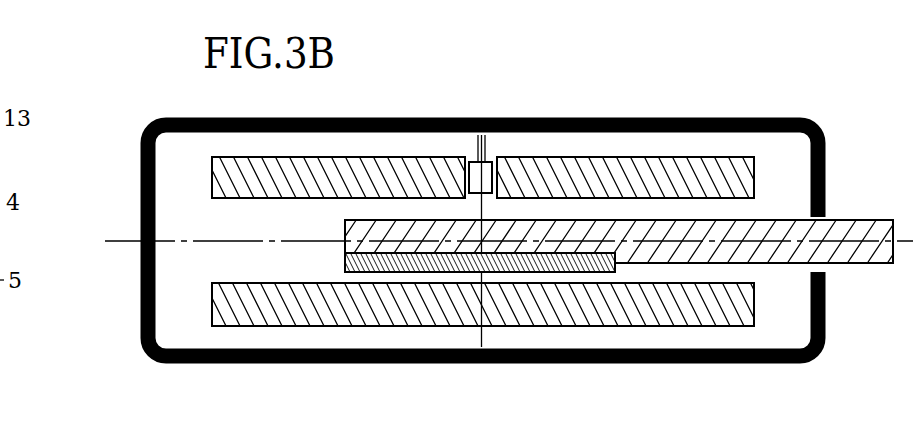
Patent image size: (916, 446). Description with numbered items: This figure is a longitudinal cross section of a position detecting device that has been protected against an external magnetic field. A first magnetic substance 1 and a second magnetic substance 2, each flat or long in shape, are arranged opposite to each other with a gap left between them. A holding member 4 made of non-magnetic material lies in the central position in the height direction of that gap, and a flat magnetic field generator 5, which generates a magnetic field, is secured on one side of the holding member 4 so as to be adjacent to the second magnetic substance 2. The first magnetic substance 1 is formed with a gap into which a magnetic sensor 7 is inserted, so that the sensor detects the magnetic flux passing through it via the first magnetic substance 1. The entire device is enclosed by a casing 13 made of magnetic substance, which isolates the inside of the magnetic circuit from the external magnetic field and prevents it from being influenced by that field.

The first magnetic substance 1 is at (756, 180).
The second magnetic substance 2 is at (756, 305).
The holding member 4 is at (860, 266).
The magnetic field generator 5 is at (344, 264).
The magnetic sensor 7 is at (488, 160).
The casing 13 is at (144, 119).